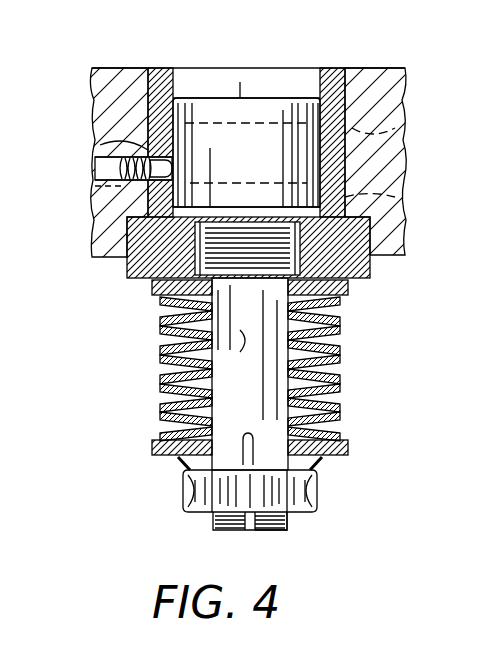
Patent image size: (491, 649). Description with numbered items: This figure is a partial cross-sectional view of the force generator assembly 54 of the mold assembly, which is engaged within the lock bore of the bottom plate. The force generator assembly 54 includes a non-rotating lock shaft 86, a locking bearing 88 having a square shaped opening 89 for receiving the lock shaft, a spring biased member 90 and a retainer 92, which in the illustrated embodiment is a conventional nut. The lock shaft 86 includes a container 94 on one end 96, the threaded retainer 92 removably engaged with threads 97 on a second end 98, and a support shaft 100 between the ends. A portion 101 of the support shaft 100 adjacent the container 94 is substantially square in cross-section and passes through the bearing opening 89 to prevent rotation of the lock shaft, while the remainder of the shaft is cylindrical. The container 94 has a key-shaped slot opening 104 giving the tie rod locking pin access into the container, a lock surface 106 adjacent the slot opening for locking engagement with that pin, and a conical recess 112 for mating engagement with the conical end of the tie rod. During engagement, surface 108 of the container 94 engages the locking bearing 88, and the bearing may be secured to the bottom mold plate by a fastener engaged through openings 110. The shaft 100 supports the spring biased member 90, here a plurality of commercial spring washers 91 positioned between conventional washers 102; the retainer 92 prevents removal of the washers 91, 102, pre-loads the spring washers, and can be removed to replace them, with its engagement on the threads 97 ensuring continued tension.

The force generator assembly 54 is at (160, 56).
The non-rotating lock shaft 86 is at (182, 100).
The locking bearing 88 is at (400, 72).
The square shaped opening 89 is at (370, 253).
The spring biased member 90 is at (288, 369).
The spring washers 91 is at (337, 435).
The retainer 92 is at (188, 490).
The container 94 is at (322, 160).
The one end 96 is at (280, 90).
The threads 97 is at (227, 530).
The second end 98 is at (292, 531).
The support shaft 100 is at (160, 342).
The square cross-sectional portion 101 is at (130, 270).
The conventional washers 102 is at (340, 290).
The slot opening 104 is at (240, 82).
The lock surface 106 is at (378, 133).
The surface 108 is at (118, 143).
The openings 110 is at (112, 196).
The conical recess 112 is at (370, 197).